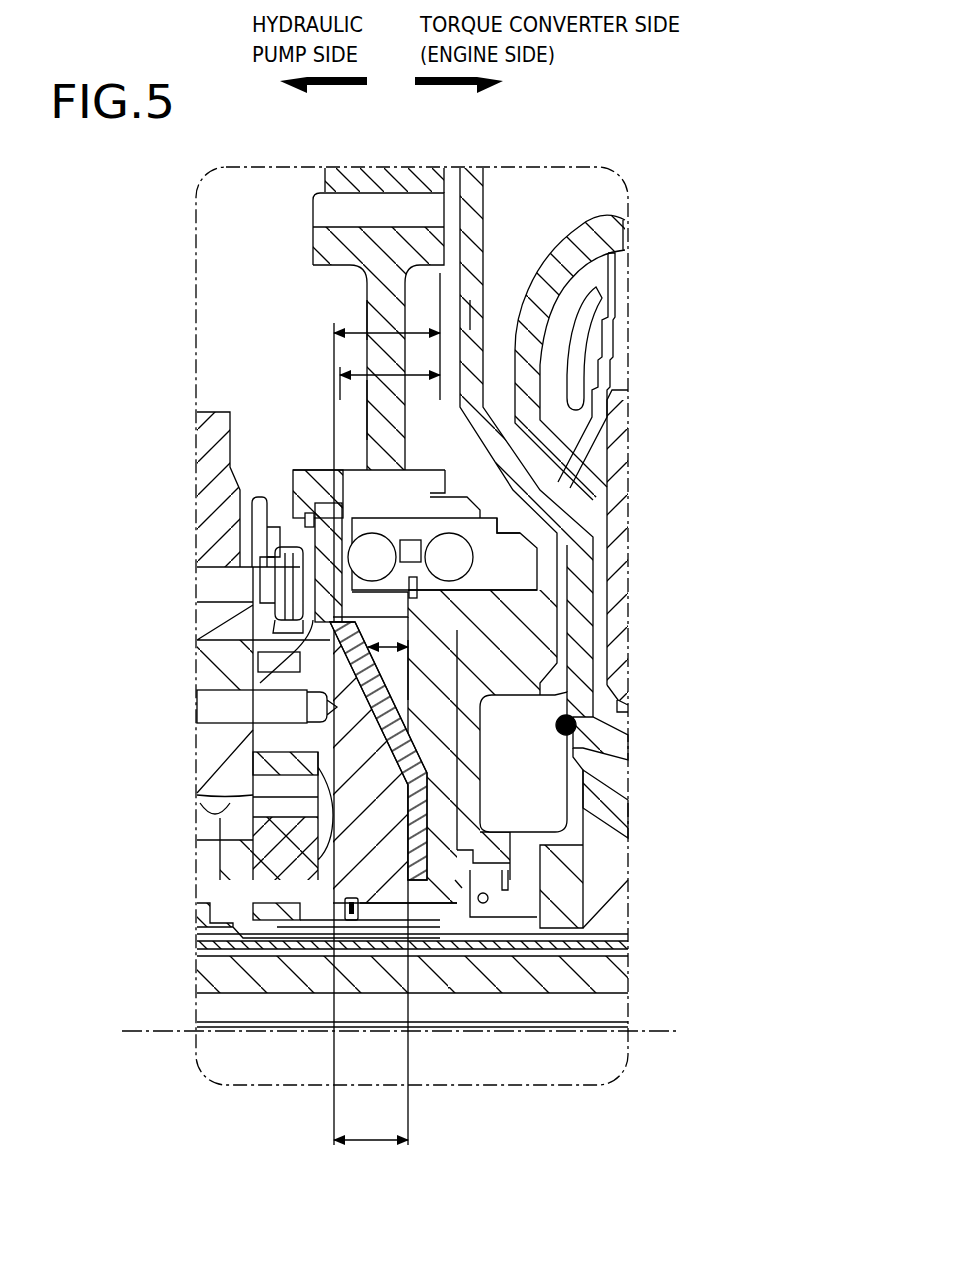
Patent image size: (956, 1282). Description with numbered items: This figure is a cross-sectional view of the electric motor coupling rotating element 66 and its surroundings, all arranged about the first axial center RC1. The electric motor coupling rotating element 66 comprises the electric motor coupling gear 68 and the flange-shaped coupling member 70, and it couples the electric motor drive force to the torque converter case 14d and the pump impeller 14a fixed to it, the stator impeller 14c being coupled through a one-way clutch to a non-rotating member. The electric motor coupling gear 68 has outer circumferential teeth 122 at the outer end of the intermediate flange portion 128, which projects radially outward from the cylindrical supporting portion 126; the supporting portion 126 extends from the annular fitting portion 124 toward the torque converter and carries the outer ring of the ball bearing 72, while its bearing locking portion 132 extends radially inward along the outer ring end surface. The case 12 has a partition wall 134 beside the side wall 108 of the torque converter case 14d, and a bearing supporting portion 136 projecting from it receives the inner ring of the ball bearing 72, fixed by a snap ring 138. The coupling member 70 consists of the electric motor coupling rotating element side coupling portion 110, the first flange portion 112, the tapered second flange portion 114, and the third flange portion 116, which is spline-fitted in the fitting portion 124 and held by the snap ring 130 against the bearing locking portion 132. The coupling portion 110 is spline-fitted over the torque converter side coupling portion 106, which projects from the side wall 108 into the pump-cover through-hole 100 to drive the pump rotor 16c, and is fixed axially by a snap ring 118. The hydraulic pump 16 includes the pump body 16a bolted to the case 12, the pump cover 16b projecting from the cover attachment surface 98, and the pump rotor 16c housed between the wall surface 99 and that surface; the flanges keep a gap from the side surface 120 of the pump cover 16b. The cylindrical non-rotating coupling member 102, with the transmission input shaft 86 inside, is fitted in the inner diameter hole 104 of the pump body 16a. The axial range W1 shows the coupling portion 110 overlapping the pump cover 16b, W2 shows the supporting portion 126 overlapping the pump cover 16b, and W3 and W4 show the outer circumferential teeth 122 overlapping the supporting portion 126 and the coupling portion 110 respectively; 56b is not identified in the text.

The hatched housing portion 56b is at (372, 168).
The outer circumferential teeth 122 is at (318, 210).
The intermediate flange portion 128 is at (365, 316).
The electric motor coupling gear 68 is at (322, 372).
The electric motor coupling rotating element 66 is at (270, 272).
The partition wall 134 is at (478, 232).
The case 12 is at (498, 284).
The torque converter case 14d is at (548, 245).
The pump impeller 14a is at (597, 277).
The stator impeller 14c is at (618, 543).
The axial range W4 is at (387, 709).
The axial range W3 is at (390, 373).
The axial range W2 is at (388, 662).
The axial range W1 is at (371, 1126).
The first axial center RC1 is at (155, 1035).
The hydraulic pump 16 is at (235, 395).
The pump body 16a is at (205, 430).
The pump cover 16b is at (258, 730).
The pump rotor 16c is at (252, 840).
The cover attachment surface 98 is at (260, 500).
The third flange portion 116 is at (322, 592).
The wall surface 99 is at (255, 790).
The fitting portion 124 is at (304, 500).
The snap ring 130 is at (308, 513).
The supporting portion 126 is at (434, 468).
The ball bearing 72 is at (470, 565).
The bearing locking portion 132 is at (488, 538).
The snap ring 138 is at (418, 600).
The side surface 120 is at (440, 680).
The bearing supporting portion 136 is at (425, 672).
The second flange portion 114 is at (478, 749).
The first flange portion 112 is at (475, 842).
The side wall 108 is at (560, 695).
The inner diameter hole 104 is at (210, 917).
The pump-cover through-hole 100 is at (335, 920).
The snap ring 118 is at (353, 921).
The electric motor coupling rotating element side coupling portion 110 is at (375, 905).
The torque converter side coupling portion 106 is at (433, 906).
The coupling member 70 is at (458, 882).
The non-rotating coupling member 102 is at (628, 944).
The transmission input shaft 86 is at (628, 980).